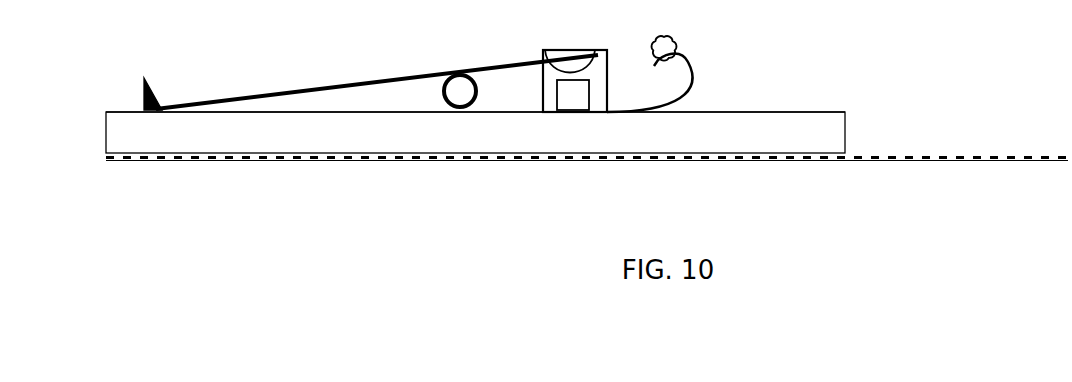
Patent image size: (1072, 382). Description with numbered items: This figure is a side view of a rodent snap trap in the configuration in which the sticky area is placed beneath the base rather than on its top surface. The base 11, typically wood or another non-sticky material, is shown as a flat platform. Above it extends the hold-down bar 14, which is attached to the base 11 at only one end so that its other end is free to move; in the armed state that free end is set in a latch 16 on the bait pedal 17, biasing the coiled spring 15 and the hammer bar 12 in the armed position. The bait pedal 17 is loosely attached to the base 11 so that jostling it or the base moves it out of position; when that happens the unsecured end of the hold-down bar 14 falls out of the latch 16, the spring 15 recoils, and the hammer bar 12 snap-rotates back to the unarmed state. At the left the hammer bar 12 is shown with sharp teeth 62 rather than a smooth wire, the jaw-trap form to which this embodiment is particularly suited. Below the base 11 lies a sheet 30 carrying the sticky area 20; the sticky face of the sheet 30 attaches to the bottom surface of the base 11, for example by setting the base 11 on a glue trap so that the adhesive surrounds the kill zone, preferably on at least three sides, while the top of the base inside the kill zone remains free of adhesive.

The base 11 is at (297, 143).
The hammer bar 12 is at (245, 112).
The hold-down bar 14 is at (373, 80).
The coiled spring 15 is at (442, 100).
The latch 16 is at (573, 48).
The bait pedal 17 is at (686, 62).
The sticky area 20 is at (1027, 155).
The sheet 30 is at (823, 161).
The sharp teeth 62 is at (150, 84).